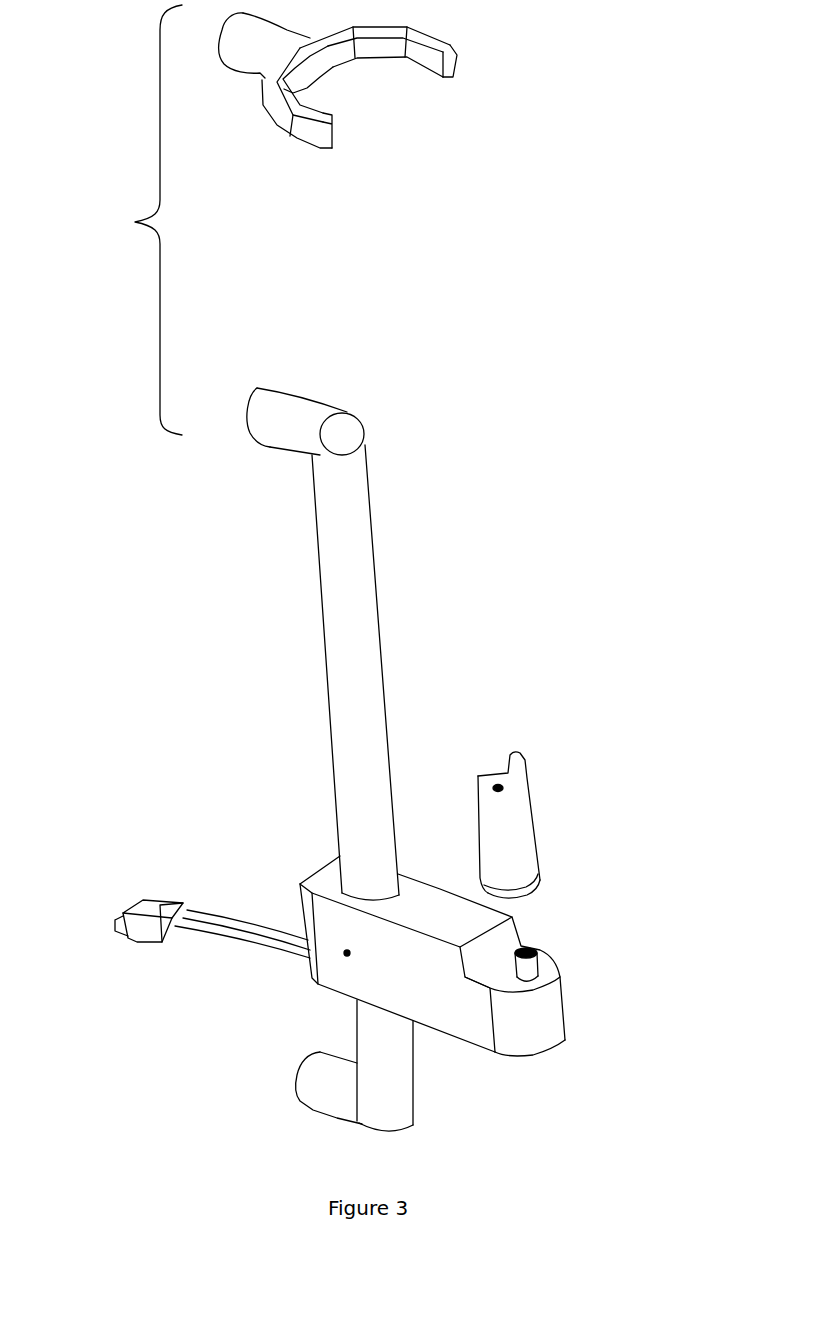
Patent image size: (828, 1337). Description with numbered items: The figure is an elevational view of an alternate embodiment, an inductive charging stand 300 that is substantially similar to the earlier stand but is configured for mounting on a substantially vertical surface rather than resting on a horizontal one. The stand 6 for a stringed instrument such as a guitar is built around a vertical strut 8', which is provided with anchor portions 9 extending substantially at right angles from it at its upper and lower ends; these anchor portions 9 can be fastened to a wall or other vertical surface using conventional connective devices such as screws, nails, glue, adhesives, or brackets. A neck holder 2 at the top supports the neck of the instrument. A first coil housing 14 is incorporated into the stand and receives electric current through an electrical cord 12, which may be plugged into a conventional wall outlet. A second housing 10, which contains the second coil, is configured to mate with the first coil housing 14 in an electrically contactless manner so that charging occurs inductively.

The inductive charging stand 300 is at (130, 220).
The neck holder 2 is at (455, 78).
The anchor portion 9 is at (258, 405).
The stand 6 is at (370, 788).
The vertical strut 8' is at (299, 788).
The second housing 10 is at (508, 825).
The electrical cord 12 is at (165, 898).
The first coil housing 14 is at (530, 967).